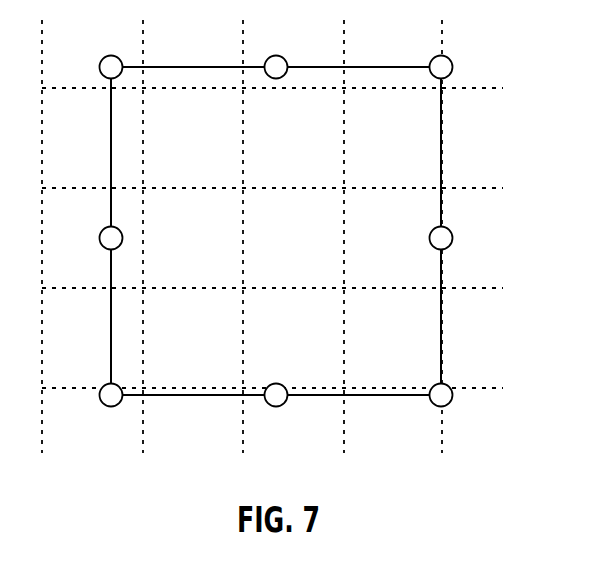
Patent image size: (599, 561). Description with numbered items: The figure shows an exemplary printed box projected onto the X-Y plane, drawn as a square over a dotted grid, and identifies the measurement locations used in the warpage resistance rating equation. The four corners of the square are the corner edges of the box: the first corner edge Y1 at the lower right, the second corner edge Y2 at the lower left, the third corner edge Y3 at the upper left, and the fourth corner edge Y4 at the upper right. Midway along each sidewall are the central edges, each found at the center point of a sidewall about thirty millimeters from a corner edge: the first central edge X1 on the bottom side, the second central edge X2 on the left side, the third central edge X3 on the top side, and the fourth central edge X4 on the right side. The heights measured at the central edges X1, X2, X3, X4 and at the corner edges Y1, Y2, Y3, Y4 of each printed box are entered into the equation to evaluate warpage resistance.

The third corner edge Y3 is at (84, 49).
The third central edge X3 is at (280, 49).
The fourth corner edge Y4 is at (475, 49).
The second central edge X2 is at (80, 242).
The fourth central edge X4 is at (475, 242).
The second corner edge Y2 is at (84, 415).
The first central edge X1 is at (280, 419).
The first corner edge Y1 is at (475, 412).